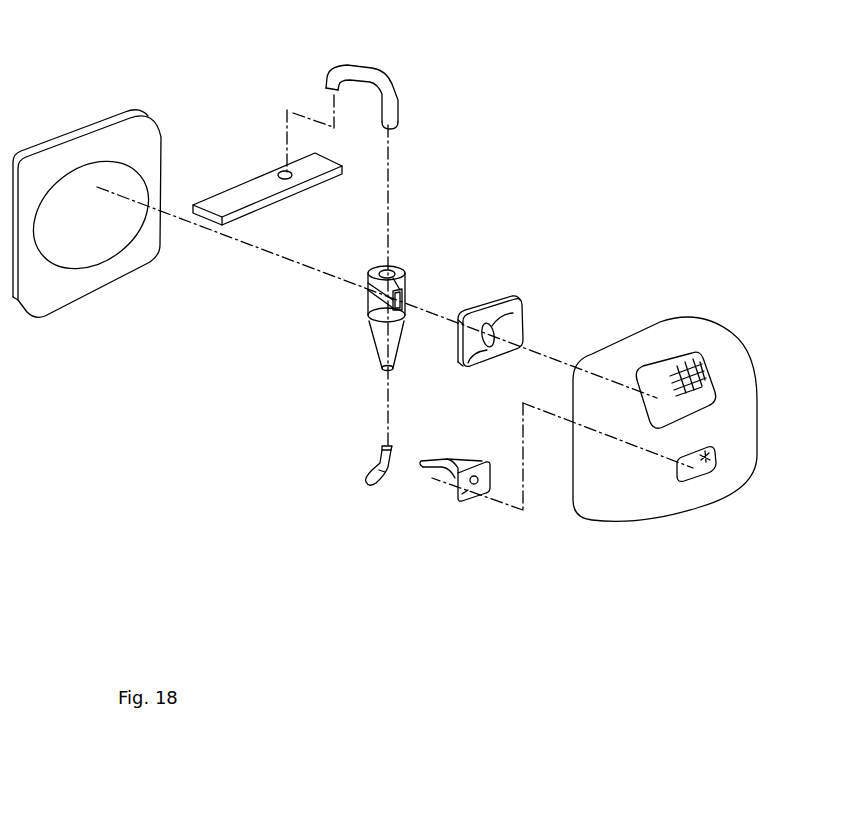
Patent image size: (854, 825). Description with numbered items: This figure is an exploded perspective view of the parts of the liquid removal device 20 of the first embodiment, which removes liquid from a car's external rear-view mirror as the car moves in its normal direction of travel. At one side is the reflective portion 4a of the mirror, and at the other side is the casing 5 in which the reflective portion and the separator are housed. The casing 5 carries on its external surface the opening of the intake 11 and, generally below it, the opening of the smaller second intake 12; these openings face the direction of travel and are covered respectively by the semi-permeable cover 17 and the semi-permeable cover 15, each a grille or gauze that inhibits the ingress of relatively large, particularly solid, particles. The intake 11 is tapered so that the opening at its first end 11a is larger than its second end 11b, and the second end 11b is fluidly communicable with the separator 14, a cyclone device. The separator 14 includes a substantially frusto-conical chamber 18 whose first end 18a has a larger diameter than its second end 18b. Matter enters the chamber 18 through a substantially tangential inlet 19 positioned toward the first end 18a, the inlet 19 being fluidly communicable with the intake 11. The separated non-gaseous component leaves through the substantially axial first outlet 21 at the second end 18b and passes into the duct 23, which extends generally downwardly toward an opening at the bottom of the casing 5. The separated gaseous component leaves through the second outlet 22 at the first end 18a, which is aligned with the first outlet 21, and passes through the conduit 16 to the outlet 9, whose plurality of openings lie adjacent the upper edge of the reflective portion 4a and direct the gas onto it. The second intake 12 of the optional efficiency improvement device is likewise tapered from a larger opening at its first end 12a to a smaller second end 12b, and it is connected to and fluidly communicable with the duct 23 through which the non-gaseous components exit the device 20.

The reflective portion 4a is at (93, 280).
The outlet 9 is at (255, 190).
The conduit 16 is at (367, 73).
The liquid removal device 20 is at (425, 197).
The second outlet 22 is at (391, 270).
The first end 18a is at (398, 273).
The chamber 18 is at (367, 274).
The substantially tangential inlet 19 is at (383, 308).
The separator 14 is at (342, 320).
The second end 18b is at (396, 367).
The first outlet 21 is at (407, 391).
The intake 11 is at (544, 303).
The second end 11b is at (468, 311).
The first end 11a is at (488, 355).
The duct 23 is at (367, 478).
The second end 12b is at (417, 474).
The second intake 12 is at (395, 543).
The first end 12a is at (462, 500).
The casing 5 is at (637, 498).
The semi-permeable cover 17 is at (678, 360).
The semi-permeable cover 15 is at (690, 473).